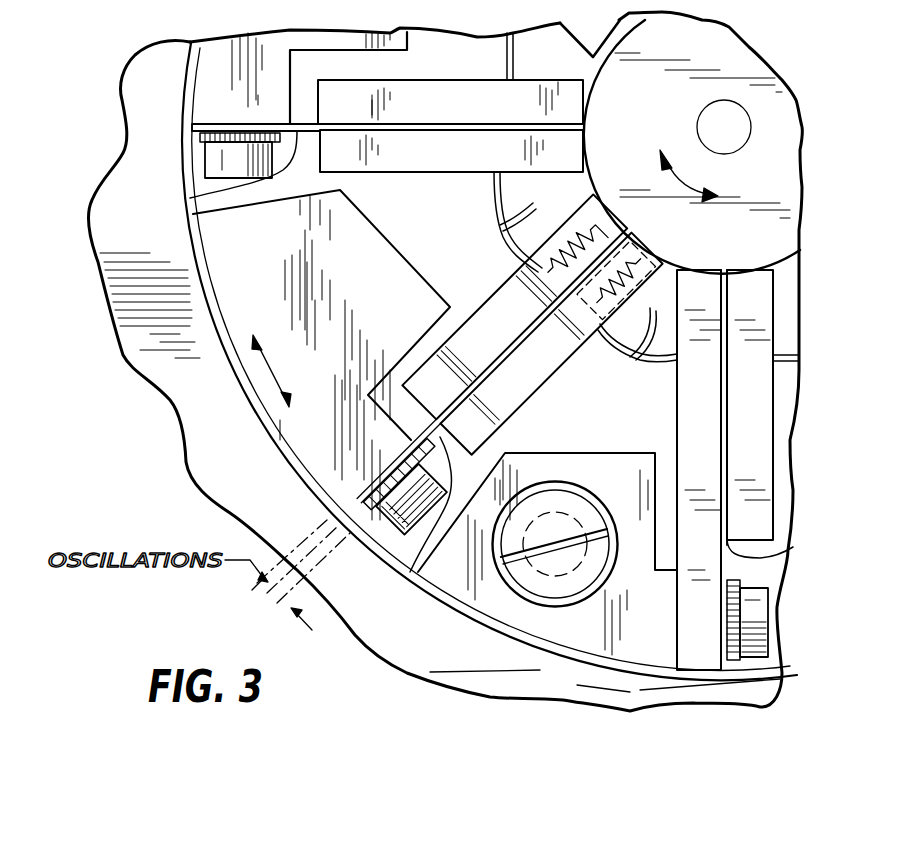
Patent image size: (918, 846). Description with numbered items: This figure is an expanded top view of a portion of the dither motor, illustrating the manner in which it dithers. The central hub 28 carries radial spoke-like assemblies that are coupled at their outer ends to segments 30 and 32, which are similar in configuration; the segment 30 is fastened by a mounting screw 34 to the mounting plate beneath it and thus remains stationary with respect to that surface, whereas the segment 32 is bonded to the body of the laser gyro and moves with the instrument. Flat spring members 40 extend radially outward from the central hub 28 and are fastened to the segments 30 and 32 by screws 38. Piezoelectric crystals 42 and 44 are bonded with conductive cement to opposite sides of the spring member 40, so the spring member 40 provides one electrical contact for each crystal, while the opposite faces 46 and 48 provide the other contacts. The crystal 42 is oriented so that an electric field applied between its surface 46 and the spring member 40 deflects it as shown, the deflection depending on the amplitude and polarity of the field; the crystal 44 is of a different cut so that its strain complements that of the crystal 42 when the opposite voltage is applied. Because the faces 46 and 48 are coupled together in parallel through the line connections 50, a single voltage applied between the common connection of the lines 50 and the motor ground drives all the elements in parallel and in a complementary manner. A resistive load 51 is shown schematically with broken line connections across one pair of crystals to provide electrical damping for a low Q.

The central hub 28 is at (750, 70).
The segment 30 is at (640, 643).
The segment 32 is at (243, 313).
The mounting screw 34 is at (555, 598).
The screw 38 is at (223, 162).
The flat spring member 40 is at (190, 198).
The piezoelectric crystal 42 is at (452, 165).
The piezoelectric crystal 44 is at (432, 95).
The opposite face 46 is at (487, 303).
The opposite face 48 is at (560, 375).
The line connection 50 is at (495, 218).
The resistive load 51 is at (555, 228).